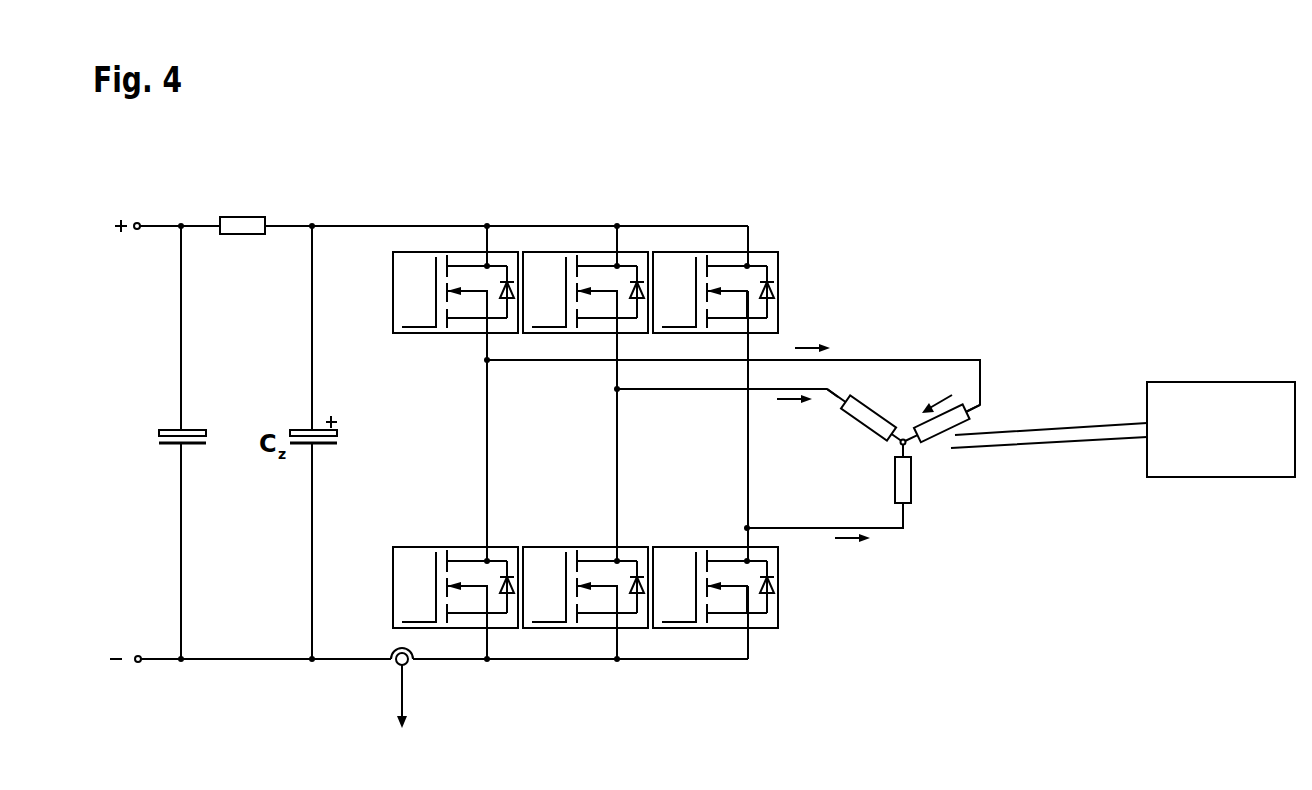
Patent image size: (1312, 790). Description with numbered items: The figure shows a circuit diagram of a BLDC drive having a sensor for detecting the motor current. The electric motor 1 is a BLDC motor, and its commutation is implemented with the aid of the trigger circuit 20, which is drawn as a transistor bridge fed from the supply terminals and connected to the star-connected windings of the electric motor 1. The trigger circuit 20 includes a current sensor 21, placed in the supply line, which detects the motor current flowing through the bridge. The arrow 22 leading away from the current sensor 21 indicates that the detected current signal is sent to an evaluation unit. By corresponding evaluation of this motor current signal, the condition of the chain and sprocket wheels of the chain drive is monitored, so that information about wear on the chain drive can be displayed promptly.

The trigger circuit 20 is at (1110, 198).
The electric motor 1 is at (965, 473).
The current sensor 21 is at (388, 671).
The arrow 22 is at (396, 737).